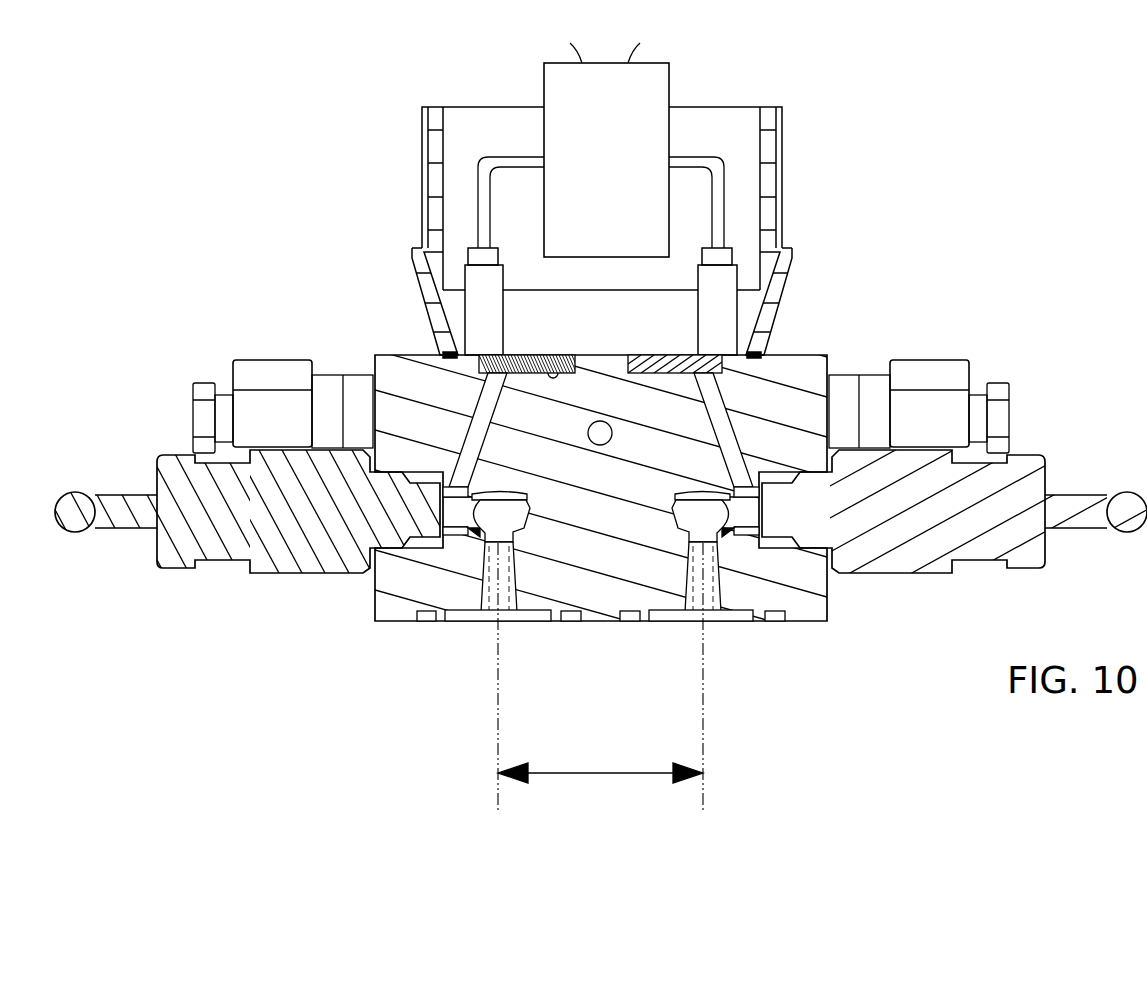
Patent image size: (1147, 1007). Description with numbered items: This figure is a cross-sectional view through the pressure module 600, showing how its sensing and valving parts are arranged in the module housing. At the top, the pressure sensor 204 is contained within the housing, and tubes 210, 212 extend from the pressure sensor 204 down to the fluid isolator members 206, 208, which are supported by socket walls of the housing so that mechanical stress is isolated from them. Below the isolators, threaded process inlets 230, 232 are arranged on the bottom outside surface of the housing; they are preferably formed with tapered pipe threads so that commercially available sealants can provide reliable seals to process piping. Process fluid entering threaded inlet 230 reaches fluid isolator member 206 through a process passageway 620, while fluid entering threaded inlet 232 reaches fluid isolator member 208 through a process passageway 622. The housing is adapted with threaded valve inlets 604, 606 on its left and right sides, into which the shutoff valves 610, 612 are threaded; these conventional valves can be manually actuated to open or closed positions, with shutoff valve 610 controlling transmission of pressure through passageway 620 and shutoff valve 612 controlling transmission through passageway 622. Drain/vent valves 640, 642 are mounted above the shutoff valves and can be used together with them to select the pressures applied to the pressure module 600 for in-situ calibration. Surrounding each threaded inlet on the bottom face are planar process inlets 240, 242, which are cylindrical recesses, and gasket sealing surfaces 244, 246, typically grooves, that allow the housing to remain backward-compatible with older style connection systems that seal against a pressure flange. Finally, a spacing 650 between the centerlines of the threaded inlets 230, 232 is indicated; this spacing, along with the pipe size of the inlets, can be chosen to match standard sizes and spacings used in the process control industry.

The pressure sensor 204 is at (628, 149).
The fluid isolator member 206 is at (518, 355).
The fluid isolator member 208 is at (683, 355).
The tube 210 is at (523, 152).
The tube 212 is at (690, 153).
The threaded process inlet 230 is at (515, 560).
The threaded process inlet 232 is at (687, 568).
The planar process inlet 240 is at (527, 622).
The planar process inlet 242 is at (728, 622).
The gasket sealing surface 244 is at (427, 622).
The gasket sealing surface 246 is at (775, 622).
The pressure module 600 is at (958, 227).
The threaded valve inlet 604 is at (405, 474).
The threaded valve inlet 606 is at (742, 410).
The shutoff valve 610 is at (290, 573).
The shutoff valve 612 is at (890, 573).
The process passageway 620 is at (483, 440).
The process passageway 622 is at (714, 445).
The drain/vent valve 640 is at (275, 360).
The drain/vent valve 642 is at (908, 360).
The spacing 650 is at (572, 773).